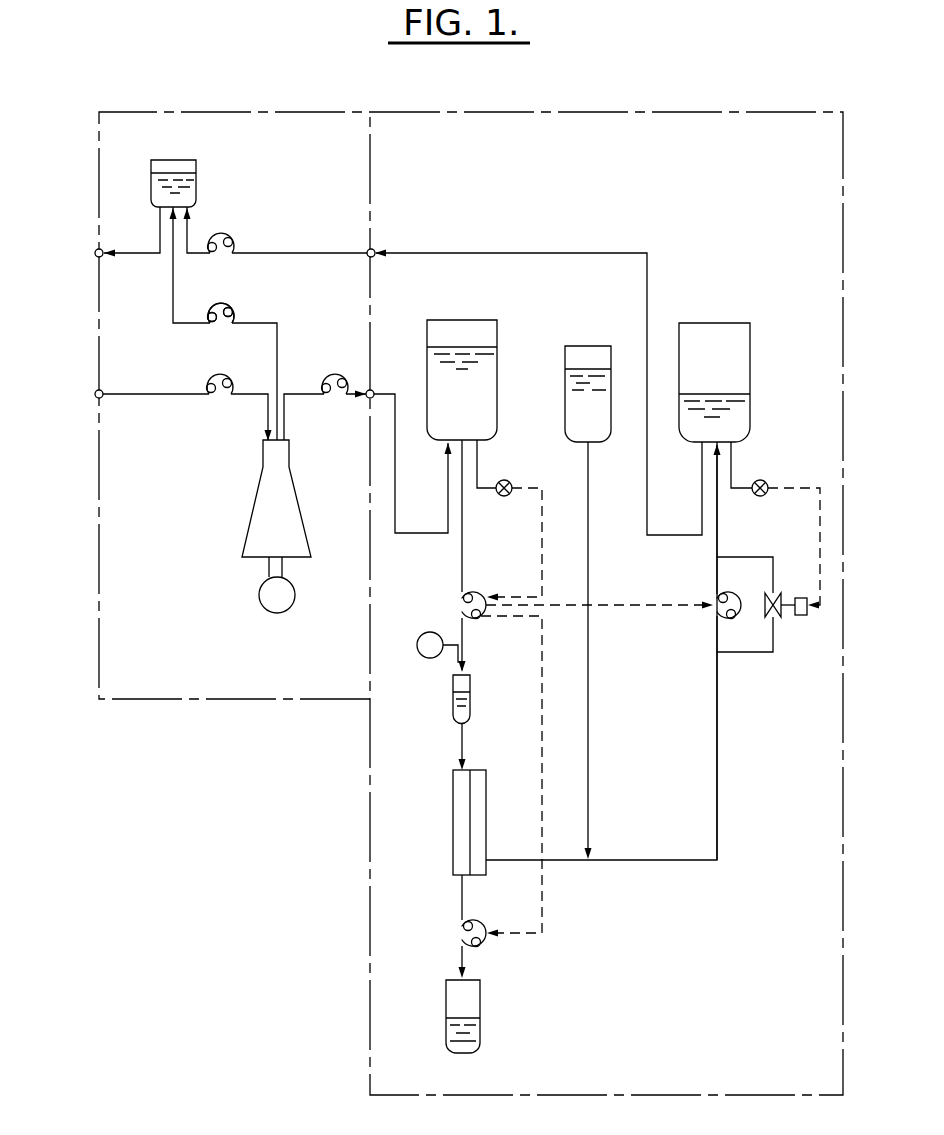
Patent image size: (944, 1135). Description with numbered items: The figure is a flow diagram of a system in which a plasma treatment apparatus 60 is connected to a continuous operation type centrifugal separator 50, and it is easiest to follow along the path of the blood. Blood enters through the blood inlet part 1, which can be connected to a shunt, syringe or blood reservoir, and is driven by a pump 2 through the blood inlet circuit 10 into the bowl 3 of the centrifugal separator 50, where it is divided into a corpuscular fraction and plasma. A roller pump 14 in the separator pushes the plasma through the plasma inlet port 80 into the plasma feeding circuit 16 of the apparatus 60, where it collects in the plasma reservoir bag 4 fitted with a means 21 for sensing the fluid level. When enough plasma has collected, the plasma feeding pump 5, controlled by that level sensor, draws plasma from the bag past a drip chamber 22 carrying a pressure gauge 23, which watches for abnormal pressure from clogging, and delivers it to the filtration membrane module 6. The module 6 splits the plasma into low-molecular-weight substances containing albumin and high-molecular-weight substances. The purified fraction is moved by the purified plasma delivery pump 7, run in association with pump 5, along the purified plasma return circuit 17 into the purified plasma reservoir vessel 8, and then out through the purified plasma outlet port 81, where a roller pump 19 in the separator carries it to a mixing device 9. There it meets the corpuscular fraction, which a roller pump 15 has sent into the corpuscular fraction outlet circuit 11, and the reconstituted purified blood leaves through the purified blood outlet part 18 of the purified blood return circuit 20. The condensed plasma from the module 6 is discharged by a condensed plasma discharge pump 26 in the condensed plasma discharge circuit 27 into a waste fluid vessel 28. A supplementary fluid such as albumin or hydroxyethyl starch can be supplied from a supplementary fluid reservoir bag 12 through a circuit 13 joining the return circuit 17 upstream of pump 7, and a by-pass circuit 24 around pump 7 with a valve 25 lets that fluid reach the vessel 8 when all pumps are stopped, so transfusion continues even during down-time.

The blood inlet part 1 is at (97, 398).
The pump 2 is at (232, 380).
The bowl 3 is at (250, 520).
The plasma reservoir bag 4 is at (490, 322).
The plasma feeding pump 5 is at (478, 591).
The filtration membrane module 6 is at (453, 818).
The purified plasma delivery pump 7 is at (712, 612).
The purified plasma reservoir vessel 8 is at (750, 352).
The mixing device 9 is at (196, 178).
The blood inlet circuit 10 is at (158, 400).
The corpuscular fraction outlet circuit 11 is at (188, 332).
The supplementary fluid reservoir bag 12 is at (590, 344).
The circuit for supplying a supplementary fluid 13 is at (590, 736).
The roller pump 14 is at (335, 374).
The roller pump 15 is at (236, 300).
The plasma feeding circuit 16 is at (418, 532).
The purified plasma return circuit 17 is at (538, 252).
The purified blood outlet part 18 is at (97, 251).
The roller pump 19 is at (236, 229).
The purified blood return circuit 20 is at (146, 262).
The means for sensing the fluid level 21 is at (510, 480).
The drip chamber 22 is at (474, 698).
The pressure gauge 23 is at (420, 636).
The by-pass circuit 24 is at (748, 556).
The valve 25 is at (780, 590).
The condensed plasma discharge pump 26 is at (478, 920).
The condensed plasma discharge circuit 27 is at (460, 895).
The waste fluid vessel 28 is at (446, 1028).
The continuous operation type centrifugal separator 50 is at (218, 702).
The apparatus for plasma treatment 60 is at (370, 903).
The plasma inlet port 80 is at (366, 402).
The purified plasma outlet port 81 is at (379, 238).